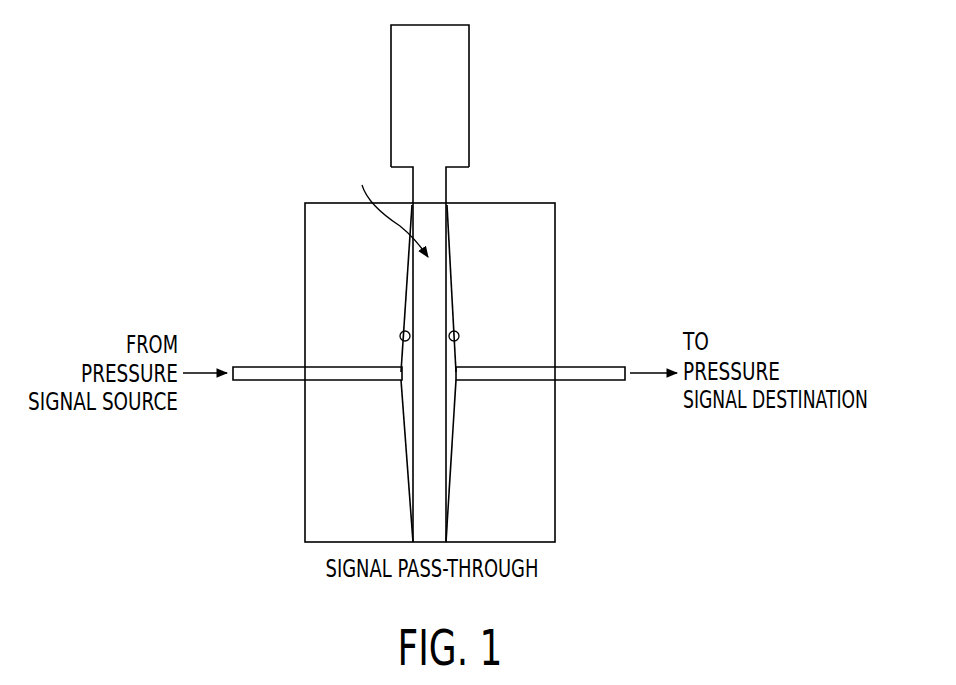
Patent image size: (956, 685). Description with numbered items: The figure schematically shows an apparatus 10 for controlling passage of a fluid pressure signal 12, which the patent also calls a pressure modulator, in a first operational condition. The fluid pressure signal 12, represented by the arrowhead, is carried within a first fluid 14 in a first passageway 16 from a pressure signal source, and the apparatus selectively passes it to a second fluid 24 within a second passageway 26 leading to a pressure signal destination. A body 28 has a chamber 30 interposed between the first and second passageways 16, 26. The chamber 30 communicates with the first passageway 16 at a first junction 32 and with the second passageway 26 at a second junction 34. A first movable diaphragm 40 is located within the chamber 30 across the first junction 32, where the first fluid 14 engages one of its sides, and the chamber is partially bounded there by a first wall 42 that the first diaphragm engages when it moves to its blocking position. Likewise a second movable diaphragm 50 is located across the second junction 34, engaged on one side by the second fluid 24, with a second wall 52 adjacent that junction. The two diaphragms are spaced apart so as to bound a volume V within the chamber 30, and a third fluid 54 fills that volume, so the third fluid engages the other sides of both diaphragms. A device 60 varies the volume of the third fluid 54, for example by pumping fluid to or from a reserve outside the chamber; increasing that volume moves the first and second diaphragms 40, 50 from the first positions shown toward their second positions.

The apparatus 10 is at (177, 168).
The fluid pressure signal 12 is at (195, 372).
The first fluid 14 is at (267, 380).
The first passageway 16 is at (275, 367).
The second fluid 24 is at (577, 380).
The second passageway 26 is at (576, 367).
The body 28 is at (555, 517).
The chamber 30 is at (428, 291).
The first junction 32 is at (400, 383).
The second junction 34 is at (460, 383).
The first diaphragm 40 is at (412, 296).
The first wall 42 is at (400, 333).
The second diaphragm 50 is at (447, 310).
The second wall 52 is at (459, 334).
The third fluid 54 is at (437, 490).
The device for varying the volume 60 is at (470, 103).